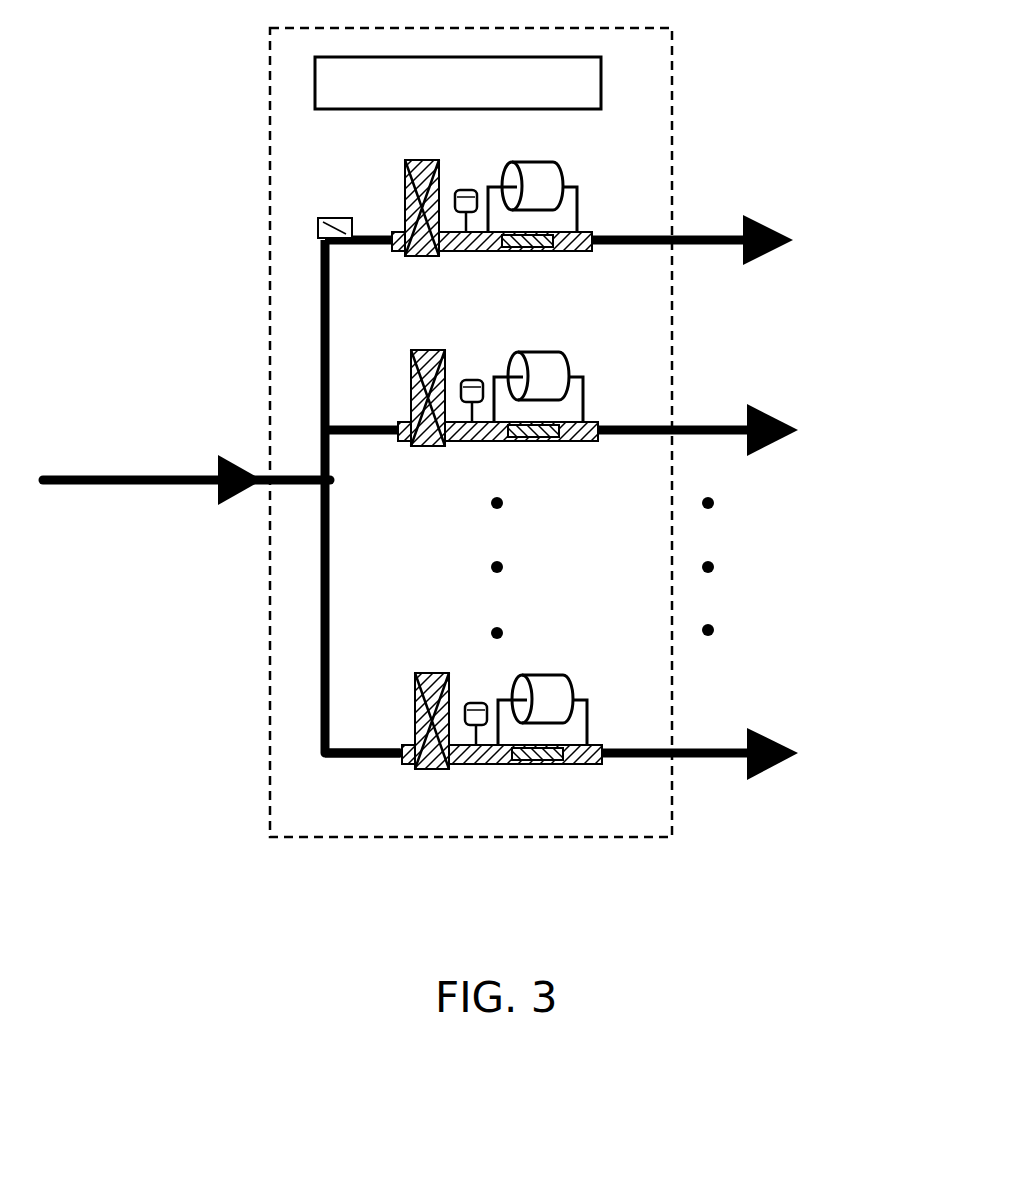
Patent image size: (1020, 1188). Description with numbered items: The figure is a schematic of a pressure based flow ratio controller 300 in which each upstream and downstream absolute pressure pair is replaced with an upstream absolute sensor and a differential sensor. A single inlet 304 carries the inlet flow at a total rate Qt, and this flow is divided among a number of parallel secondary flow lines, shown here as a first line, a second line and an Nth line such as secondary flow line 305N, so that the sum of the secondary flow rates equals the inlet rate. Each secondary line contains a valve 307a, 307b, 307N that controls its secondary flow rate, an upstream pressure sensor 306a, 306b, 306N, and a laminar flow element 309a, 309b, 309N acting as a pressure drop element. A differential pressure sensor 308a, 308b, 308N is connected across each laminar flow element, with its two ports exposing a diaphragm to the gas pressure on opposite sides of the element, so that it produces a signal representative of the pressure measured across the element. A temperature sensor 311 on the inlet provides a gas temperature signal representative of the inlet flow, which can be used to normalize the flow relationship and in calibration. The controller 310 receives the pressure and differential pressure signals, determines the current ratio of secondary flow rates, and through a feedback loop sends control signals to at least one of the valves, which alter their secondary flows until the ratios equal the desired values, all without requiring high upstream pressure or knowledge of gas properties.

The pressure based flow ratio controller 300 is at (672, 107).
The inlet 304 is at (257, 485).
The secondary flow line 305N is at (742, 736).
The pressure sensor 306a is at (473, 190).
The pressure sensor 306b is at (494, 365).
The pressure sensor 306N is at (514, 694).
The valve 307a is at (405, 178).
The valve 307b is at (397, 378).
The valve 307N is at (400, 703).
The differential pressure sensor 308a is at (543, 173).
The differential pressure sensor 308b is at (575, 366).
The differential pressure sensor 308N is at (583, 699).
The laminar flow element 309a is at (538, 250).
The laminar flow element 309b is at (574, 464).
The laminar flow element 309N is at (527, 786).
The controller 310 is at (601, 83).
The temperature sensor 311 is at (323, 214).